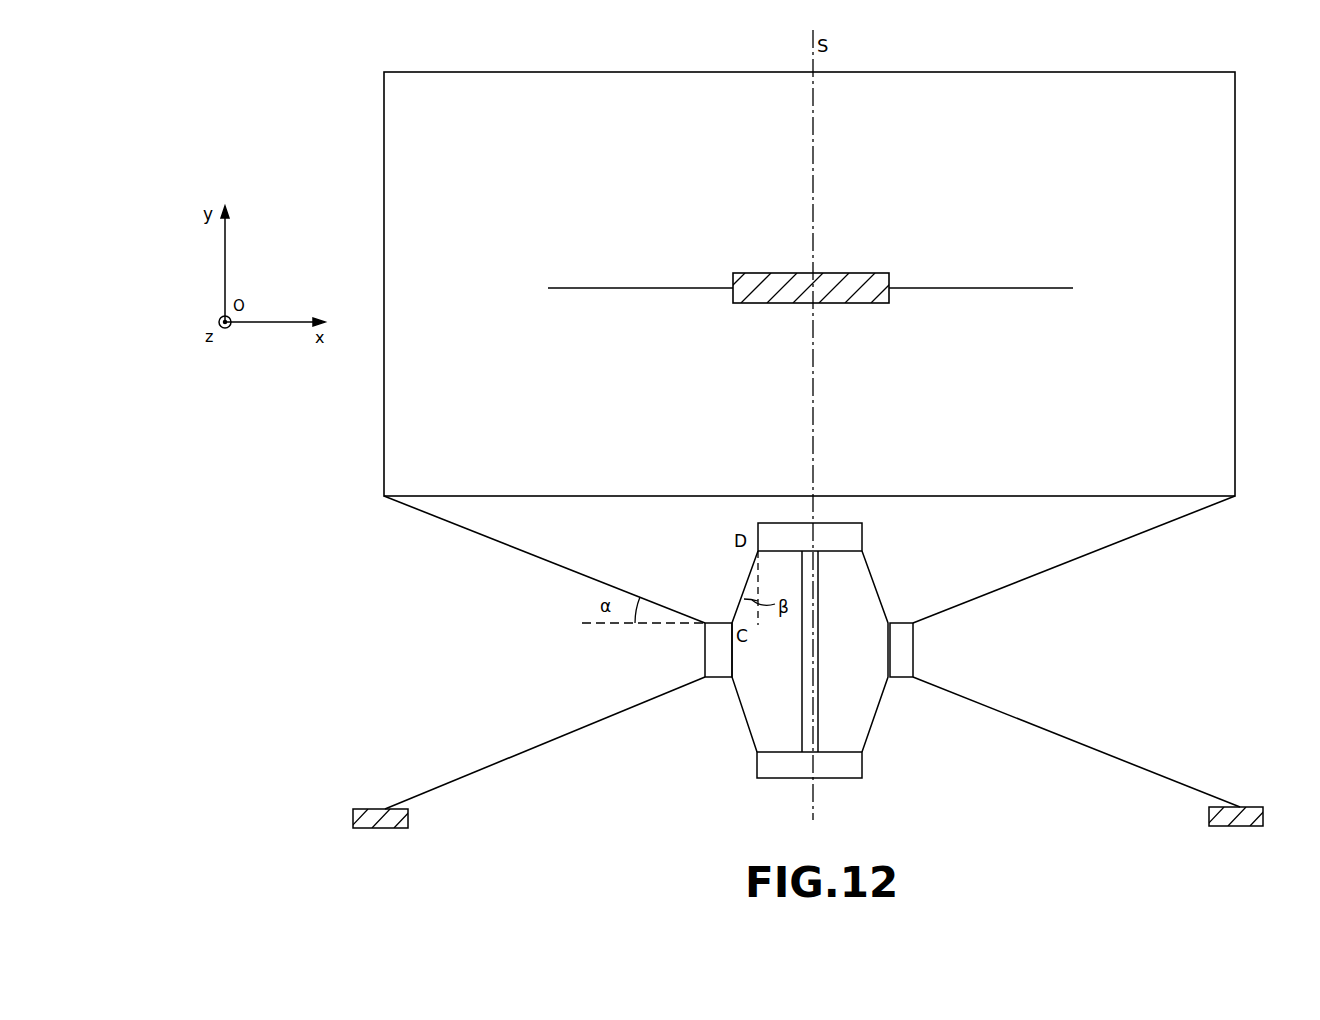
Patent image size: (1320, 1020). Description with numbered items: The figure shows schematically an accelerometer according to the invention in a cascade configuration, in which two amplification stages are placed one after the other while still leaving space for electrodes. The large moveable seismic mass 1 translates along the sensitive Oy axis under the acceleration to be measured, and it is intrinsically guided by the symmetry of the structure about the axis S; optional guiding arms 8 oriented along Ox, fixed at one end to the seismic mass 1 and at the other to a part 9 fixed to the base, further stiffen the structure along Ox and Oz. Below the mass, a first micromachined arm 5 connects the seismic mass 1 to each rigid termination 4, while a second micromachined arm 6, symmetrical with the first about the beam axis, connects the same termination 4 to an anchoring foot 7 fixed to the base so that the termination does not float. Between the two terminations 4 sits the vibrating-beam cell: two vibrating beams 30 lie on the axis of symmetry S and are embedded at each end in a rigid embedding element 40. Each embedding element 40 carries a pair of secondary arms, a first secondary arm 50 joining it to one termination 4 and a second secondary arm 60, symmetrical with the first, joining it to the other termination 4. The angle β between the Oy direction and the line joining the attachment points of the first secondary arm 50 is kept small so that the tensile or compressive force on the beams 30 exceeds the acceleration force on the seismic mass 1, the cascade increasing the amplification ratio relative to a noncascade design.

The seismic mass 1 is at (1213, 330).
The rigid termination 4 is at (712, 657).
The first micromachined arm 5 is at (548, 570).
The second micromachined arm 6 is at (542, 742).
The anchoring foot 7 is at (385, 821).
The guiding arm 8 is at (1027, 289).
The part fixed to the base 9 is at (850, 285).
The vibrating beam 30 is at (812, 648).
The rigid embedding element 40 is at (842, 537).
The first secondary arm 50 is at (743, 578).
The second secondary arm 60 is at (877, 580).